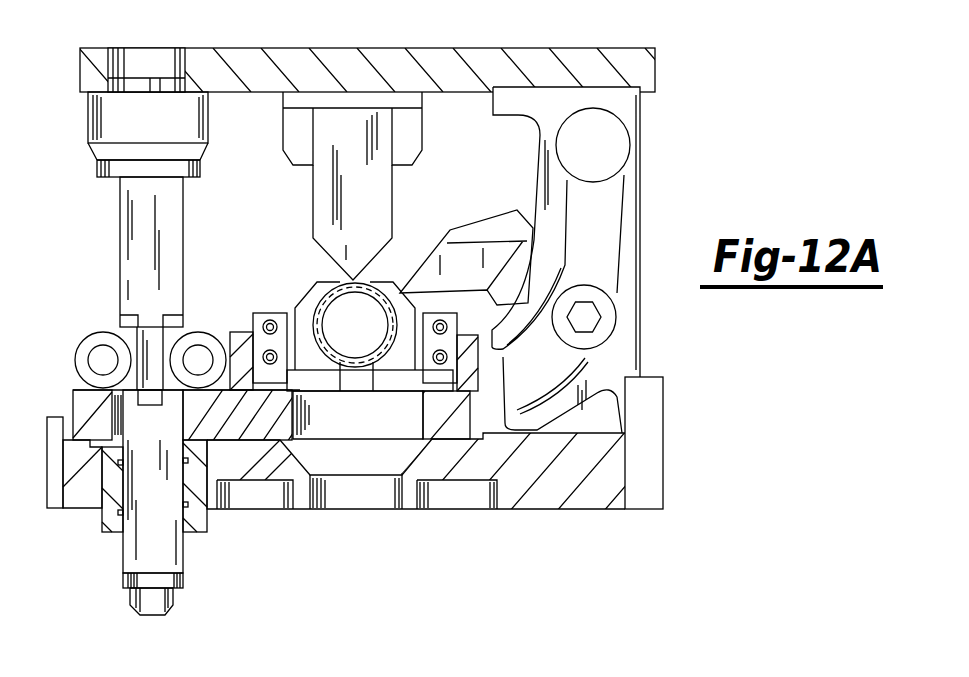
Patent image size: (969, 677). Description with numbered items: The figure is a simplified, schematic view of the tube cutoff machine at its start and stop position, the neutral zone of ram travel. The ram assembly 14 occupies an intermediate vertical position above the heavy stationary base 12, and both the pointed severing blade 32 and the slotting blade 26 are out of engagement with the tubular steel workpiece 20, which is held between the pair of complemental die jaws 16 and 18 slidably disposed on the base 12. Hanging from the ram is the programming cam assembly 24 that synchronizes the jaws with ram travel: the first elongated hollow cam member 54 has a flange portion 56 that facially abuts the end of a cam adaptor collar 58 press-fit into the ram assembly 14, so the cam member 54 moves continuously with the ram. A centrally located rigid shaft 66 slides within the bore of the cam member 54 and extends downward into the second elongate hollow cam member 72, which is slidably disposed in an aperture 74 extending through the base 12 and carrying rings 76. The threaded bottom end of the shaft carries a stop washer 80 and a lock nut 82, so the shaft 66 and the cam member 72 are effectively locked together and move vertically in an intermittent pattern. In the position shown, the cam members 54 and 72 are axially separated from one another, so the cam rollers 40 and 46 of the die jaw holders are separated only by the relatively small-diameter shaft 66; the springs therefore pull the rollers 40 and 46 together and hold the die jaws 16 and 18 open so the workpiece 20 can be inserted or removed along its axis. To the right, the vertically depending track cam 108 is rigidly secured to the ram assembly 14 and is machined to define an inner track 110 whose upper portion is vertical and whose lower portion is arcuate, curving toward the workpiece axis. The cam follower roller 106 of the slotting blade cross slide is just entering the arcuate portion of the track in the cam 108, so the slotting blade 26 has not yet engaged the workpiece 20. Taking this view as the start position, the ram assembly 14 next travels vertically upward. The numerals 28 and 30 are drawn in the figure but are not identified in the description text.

The ram assembly 14 is at (360, 14).
The programming cam assembly 24 is at (121, 217).
The cam adaptor collar 58 is at (208, 128).
The flange portion 56 is at (200, 168).
The first cam member 54 is at (170, 238).
The cam roller 46 is at (93, 337).
The cam roller 40 is at (196, 337).
The shaft 66 is at (77, 405).
The aperture 74 is at (130, 481).
The rings 76 is at (188, 461).
The second cam member 72 is at (173, 528).
The stop washer 80 is at (183, 580).
The lock nut 82 is at (173, 603).
The base 12 is at (360, 502).
The tubular steel workpiece 20 is at (372, 372).
The die jaw 16 is at (303, 300).
The die jaw 18 is at (383, 280).
The slotting blade 26 is at (466, 257).
The severing blade 32 is at (380, 190).
The hook arm 28 is at (520, 208).
The bracket 30 is at (645, 132).
The inner track 110 is at (615, 197).
The cam roller 106 is at (586, 293).
The track cam 108 is at (647, 345).